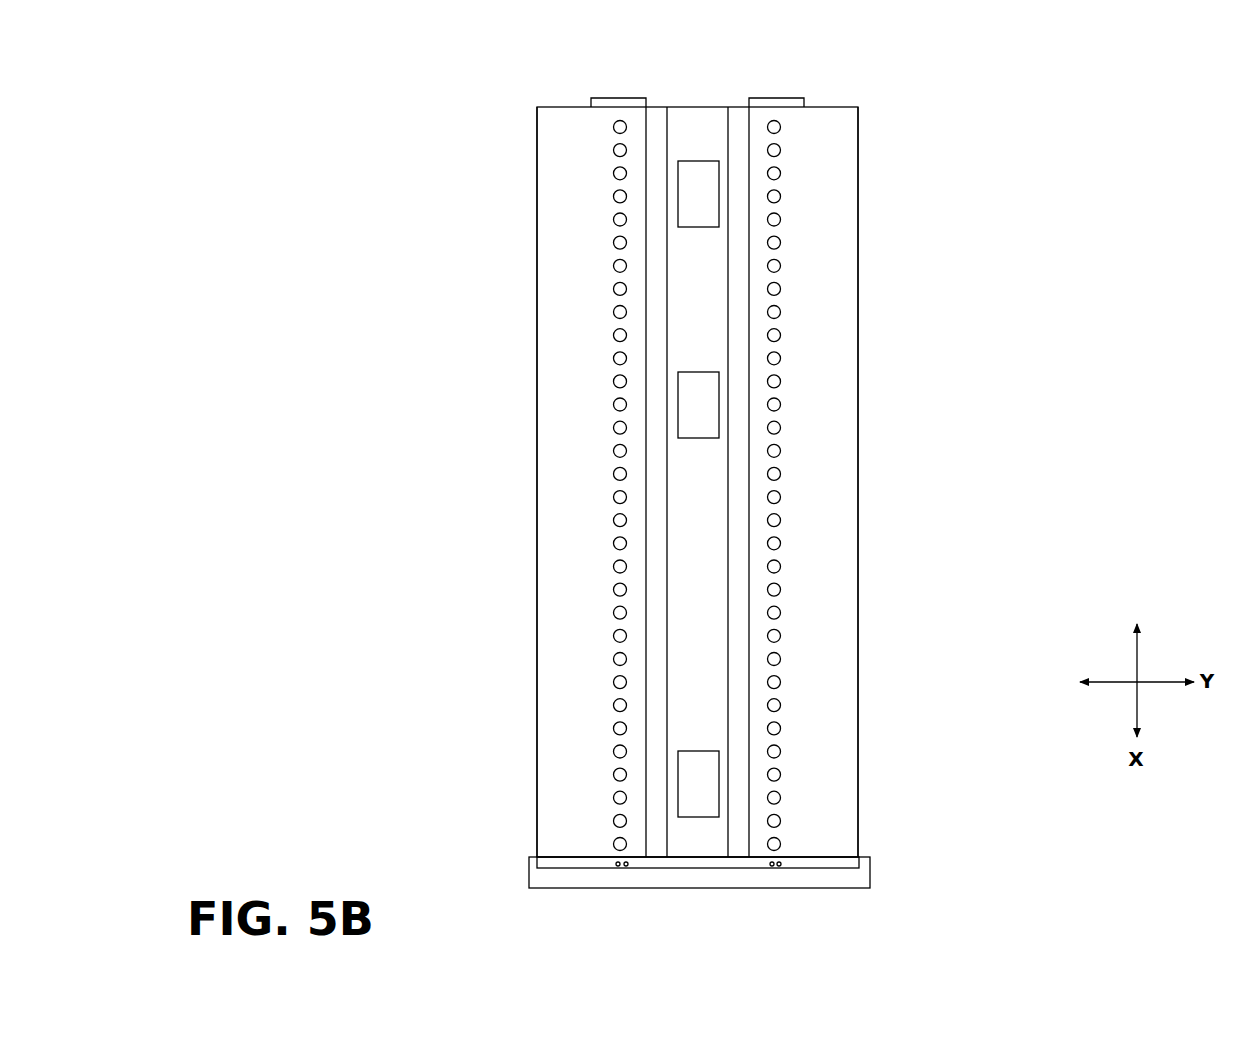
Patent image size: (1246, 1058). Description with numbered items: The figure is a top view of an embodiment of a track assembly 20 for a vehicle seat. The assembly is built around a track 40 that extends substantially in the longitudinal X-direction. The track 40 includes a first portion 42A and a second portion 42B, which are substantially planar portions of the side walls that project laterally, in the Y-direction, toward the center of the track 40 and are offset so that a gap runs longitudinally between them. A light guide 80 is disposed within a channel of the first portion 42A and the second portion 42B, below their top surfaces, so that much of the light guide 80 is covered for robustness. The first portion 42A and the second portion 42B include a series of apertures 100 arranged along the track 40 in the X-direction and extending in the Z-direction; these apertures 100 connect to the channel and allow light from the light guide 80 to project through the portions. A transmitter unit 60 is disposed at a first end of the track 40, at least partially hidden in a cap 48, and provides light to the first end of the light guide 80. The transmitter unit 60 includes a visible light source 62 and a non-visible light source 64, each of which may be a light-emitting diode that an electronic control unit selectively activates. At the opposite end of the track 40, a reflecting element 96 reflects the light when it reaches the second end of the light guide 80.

The track assembly 20 is at (894, 57).
The track 40 is at (552, 102).
The first portion 42A is at (587, 244).
The second portion 42B is at (810, 298).
The cap 48 is at (870, 880).
The transmitter unit 60 is at (870, 860).
The visible light source 62 is at (616, 867).
The non-visible light source 64 is at (628, 867).
The light guide 80 is at (615, 122).
The reflecting element 96 is at (625, 98).
The apertures 100 is at (613, 173).